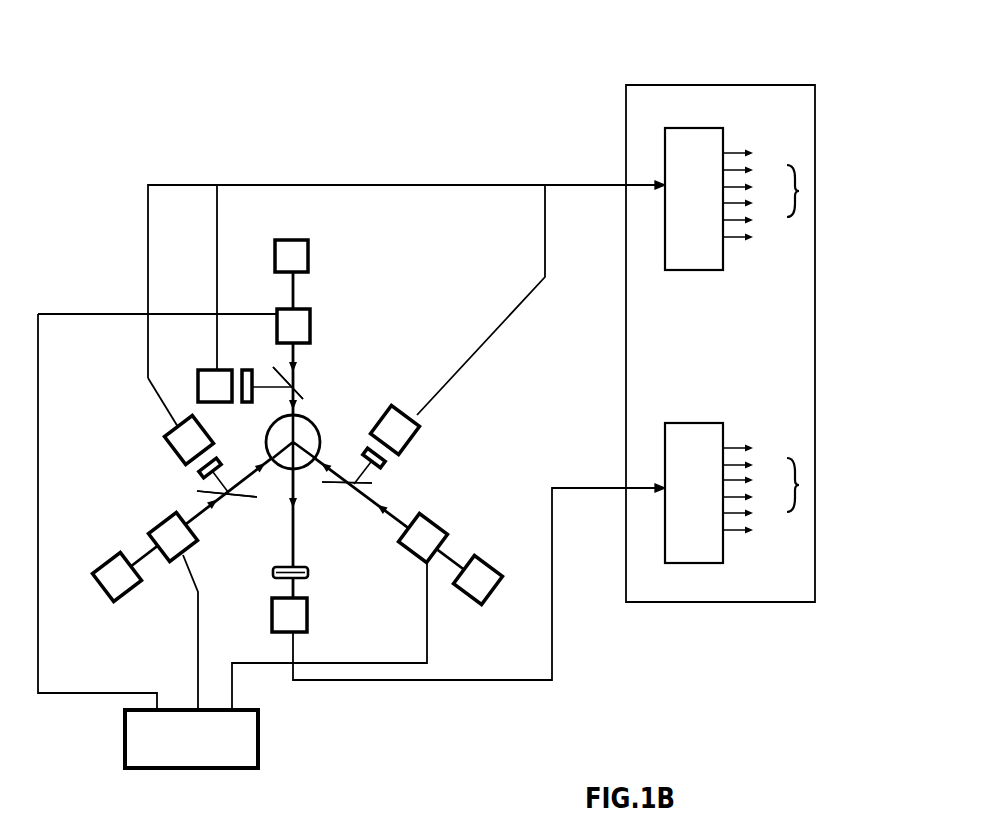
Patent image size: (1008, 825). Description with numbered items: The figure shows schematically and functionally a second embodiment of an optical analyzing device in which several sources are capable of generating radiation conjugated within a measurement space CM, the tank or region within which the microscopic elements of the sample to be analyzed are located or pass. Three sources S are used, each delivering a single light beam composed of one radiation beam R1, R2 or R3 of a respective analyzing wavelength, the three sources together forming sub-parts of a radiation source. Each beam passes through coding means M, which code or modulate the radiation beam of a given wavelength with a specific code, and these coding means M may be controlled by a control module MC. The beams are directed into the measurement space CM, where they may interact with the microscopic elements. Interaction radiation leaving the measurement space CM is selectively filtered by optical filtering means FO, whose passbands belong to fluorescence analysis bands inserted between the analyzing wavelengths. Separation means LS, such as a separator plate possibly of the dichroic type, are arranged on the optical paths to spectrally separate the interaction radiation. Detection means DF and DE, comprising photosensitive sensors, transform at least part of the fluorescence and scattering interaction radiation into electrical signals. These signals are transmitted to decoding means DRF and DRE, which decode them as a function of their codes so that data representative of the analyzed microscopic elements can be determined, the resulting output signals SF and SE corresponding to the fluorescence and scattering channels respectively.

The source S is at (308, 258).
The coding means M is at (310, 328).
The detection means DF is at (198, 383).
The optical filtering means FO is at (250, 370).
The separation means LS is at (303, 399).
The radiation beam R1 is at (227, 520).
The radiation beam R2 is at (370, 496).
The radiation beam R3 is at (303, 379).
The measurement space CM is at (317, 440).
The detection means DE is at (305, 630).
The control module MC is at (182, 768).
The decoding means DRF is at (687, 270).
The decoding means DRE is at (697, 563).
The fluorescence signals SF is at (799, 191).
The scattering signals SE is at (799, 485).